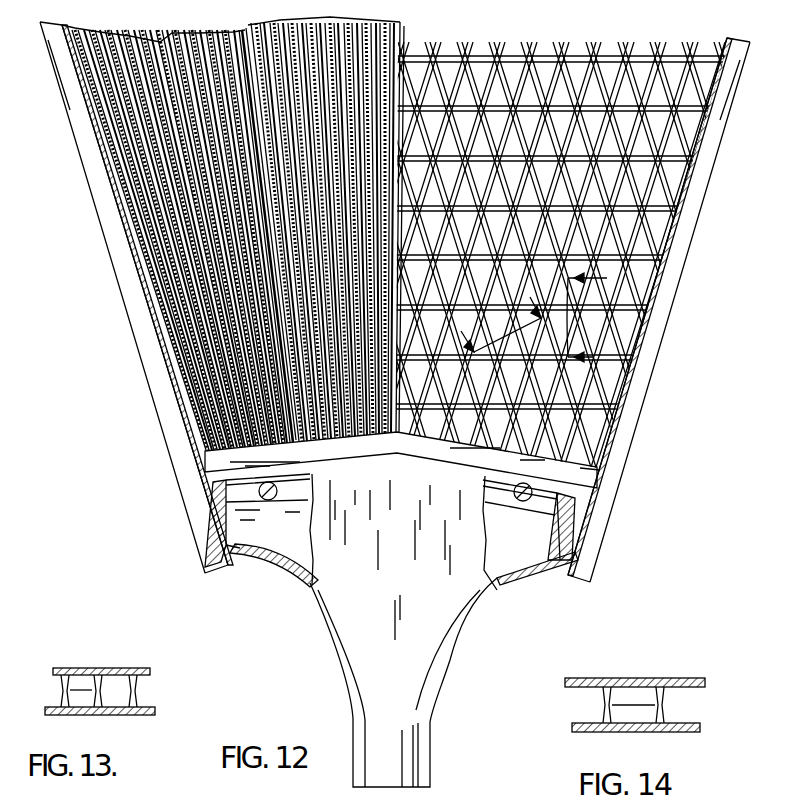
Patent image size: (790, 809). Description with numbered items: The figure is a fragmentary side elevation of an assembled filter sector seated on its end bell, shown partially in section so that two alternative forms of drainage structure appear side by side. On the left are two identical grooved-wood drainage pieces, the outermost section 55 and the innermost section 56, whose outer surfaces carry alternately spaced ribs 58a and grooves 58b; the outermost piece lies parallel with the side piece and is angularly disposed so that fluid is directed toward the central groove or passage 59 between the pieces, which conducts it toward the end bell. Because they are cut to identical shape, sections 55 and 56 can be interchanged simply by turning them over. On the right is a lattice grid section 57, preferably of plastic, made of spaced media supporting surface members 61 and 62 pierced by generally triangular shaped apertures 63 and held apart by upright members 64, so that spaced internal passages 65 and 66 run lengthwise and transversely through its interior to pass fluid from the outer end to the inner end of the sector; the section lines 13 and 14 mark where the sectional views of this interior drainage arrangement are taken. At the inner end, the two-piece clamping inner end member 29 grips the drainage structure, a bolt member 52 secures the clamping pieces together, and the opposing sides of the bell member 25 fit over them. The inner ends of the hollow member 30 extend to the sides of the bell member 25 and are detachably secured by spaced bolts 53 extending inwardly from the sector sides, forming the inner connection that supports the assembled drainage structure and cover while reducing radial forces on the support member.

In FIG. 12, the bell member 25 is at (335, 642).
In FIG. 12, the inner end member 29 is at (560, 472).
In FIG. 12, the hollow member 30 is at (708, 215).
In FIG. 12, the bolt member 52 is at (419, 557).
In FIG. 12, the spaced bolts 53 is at (582, 505).
In FIG. 12, the outermost section 55 is at (163, 33).
In FIG. 12, the innermost section 56 is at (253, 28).
In FIG. 12, the lattice grid section 57 is at (606, 57).
In FIG. 12, the ribs 58a is at (370, 28).
In FIG. 12, the grooves 58b is at (403, 28).
In FIG. 12, the central groove or passage 59 is at (242, 30).
In FIG. 12, the triangular shaped apertures 63 is at (672, 152).
In FIG. 12, the section line 13— 13 is at (493, 313).
In FIG. 12, the section line 14— 14 is at (592, 372).
In FIG. 13, the media supporting surface member 61 is at (85, 668).
In FIG. 14, the media supporting surface member 61 is at (632, 679).
In FIG. 13, the media supporting surface member 62 is at (145, 716).
In FIG. 14, the media supporting surface member 62 is at (637, 733).
In FIG. 13, the upright members 64 is at (62, 692).
In FIG. 14, the upright members 64 is at (668, 712).
In FIG. 13, the internal passage 65 is at (127, 702).
In FIG. 14, the internal passage 66 is at (643, 711).